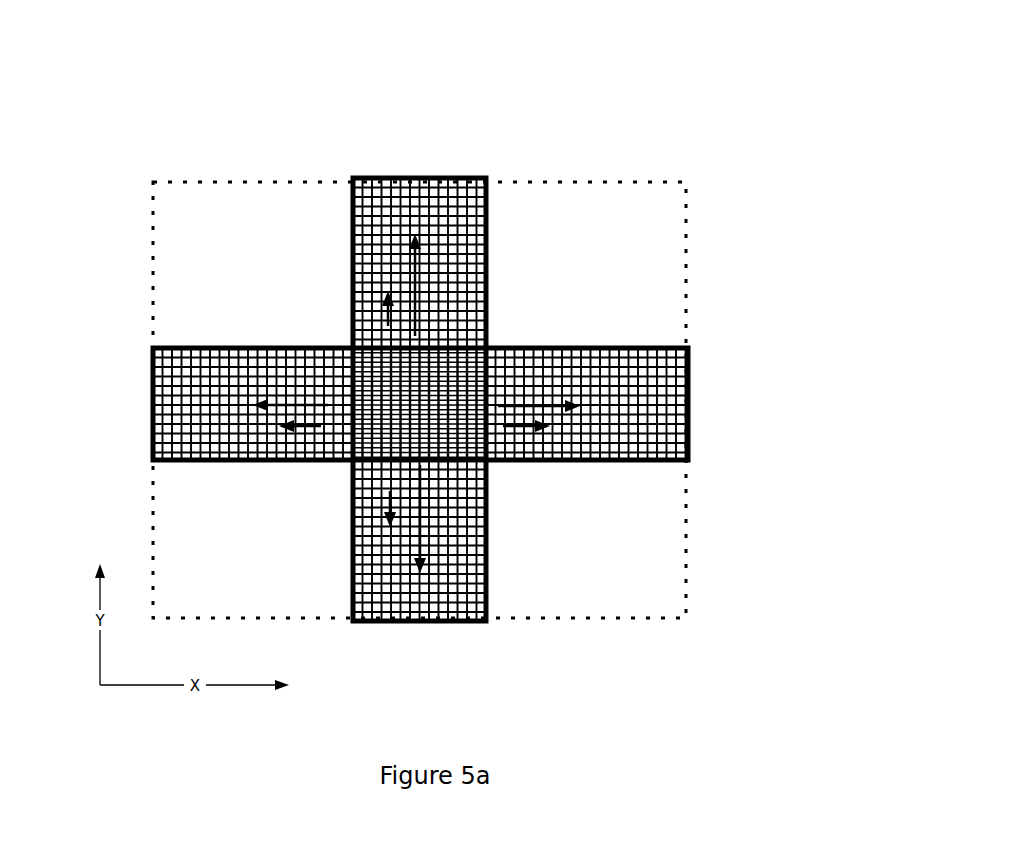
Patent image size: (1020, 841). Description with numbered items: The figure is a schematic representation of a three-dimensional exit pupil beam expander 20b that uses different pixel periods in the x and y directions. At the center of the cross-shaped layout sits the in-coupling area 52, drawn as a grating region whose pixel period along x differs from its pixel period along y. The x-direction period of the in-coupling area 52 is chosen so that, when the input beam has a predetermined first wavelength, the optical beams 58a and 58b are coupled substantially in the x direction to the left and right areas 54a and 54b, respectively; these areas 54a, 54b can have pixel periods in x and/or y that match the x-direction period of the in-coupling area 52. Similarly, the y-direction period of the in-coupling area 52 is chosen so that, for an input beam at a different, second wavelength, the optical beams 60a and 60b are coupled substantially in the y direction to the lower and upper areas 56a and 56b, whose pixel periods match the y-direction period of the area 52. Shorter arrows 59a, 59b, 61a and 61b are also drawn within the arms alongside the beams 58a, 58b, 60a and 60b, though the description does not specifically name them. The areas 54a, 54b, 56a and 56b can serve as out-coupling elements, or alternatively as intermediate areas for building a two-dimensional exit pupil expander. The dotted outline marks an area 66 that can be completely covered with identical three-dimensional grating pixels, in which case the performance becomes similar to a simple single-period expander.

The 3-dimensional exit pupil beam expander 20b is at (482, 346).
The in-coupling area 52 is at (480, 460).
The area 54a is at (165, 405).
The area 54b is at (680, 453).
The area 56a is at (462, 617).
The area 56b is at (478, 220).
The optical beam 58a is at (277, 337).
The optical beam 58b is at (570, 338).
The left column readout direction 59a is at (297, 450).
The right column readout direction 59b is at (555, 447).
The optical beam 60a is at (482, 527).
The optical beam 60b is at (347, 232).
The bottom row readout direction 61a is at (347, 520).
The top row readout direction 61b is at (347, 277).
The area 66 is at (680, 245).